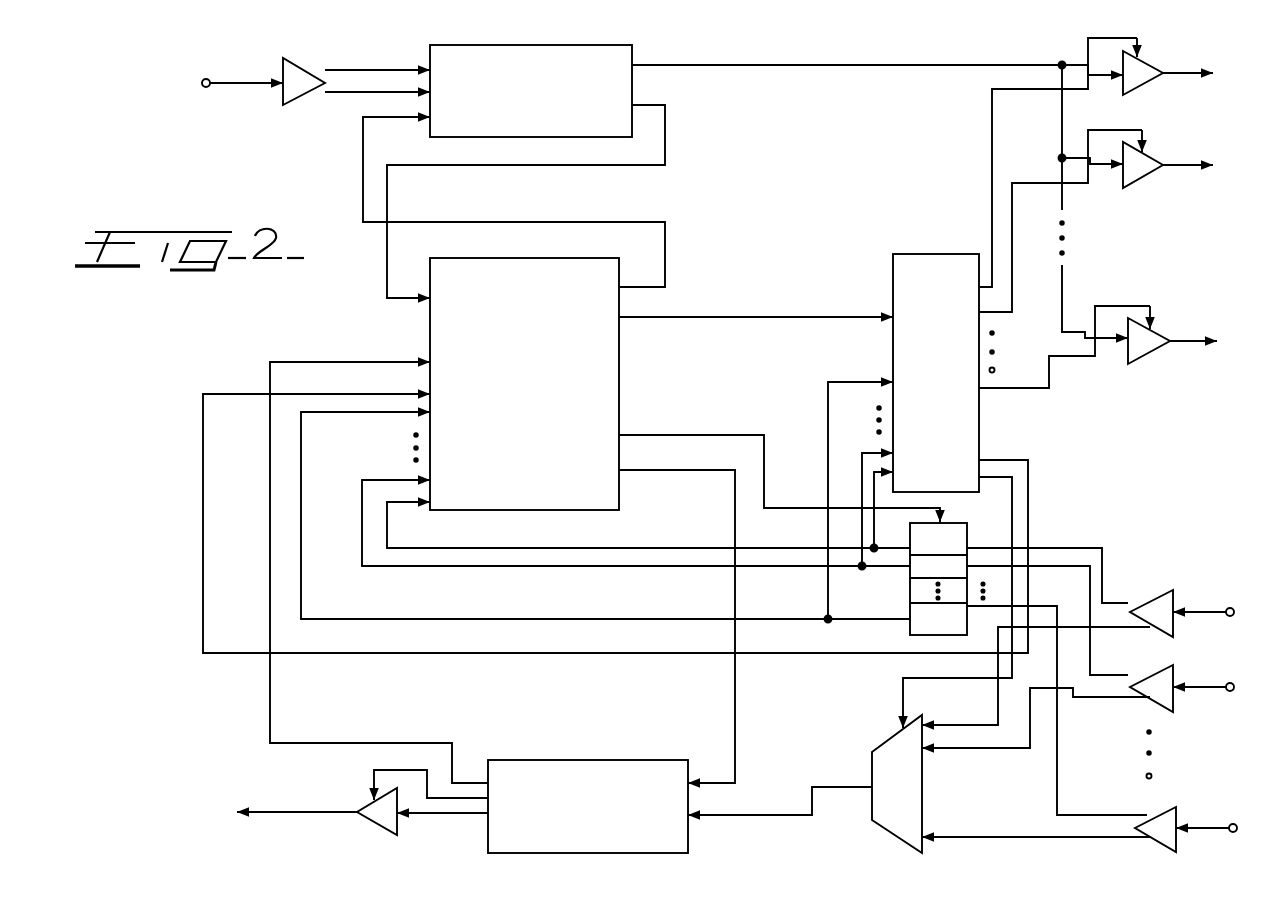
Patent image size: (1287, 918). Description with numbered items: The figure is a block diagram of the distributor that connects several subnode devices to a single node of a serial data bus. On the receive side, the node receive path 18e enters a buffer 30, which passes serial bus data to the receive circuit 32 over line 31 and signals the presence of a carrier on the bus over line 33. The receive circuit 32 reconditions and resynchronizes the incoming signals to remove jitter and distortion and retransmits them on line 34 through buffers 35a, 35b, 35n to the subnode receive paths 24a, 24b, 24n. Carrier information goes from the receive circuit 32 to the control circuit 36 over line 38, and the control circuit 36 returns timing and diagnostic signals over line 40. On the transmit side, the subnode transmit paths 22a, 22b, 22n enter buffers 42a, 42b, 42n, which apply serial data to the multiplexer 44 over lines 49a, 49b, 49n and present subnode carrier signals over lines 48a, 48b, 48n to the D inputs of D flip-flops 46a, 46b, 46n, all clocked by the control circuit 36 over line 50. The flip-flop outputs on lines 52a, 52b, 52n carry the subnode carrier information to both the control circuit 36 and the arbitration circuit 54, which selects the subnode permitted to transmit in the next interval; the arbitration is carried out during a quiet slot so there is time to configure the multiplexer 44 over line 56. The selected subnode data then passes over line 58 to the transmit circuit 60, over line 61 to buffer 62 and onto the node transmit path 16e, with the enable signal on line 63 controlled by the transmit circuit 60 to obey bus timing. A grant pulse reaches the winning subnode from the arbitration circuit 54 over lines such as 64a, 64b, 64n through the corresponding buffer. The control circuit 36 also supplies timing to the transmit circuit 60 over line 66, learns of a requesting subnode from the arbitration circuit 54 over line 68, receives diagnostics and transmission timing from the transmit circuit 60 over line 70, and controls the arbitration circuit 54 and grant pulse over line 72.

The node transmit path 16e is at (285, 812).
The node receive path 18e is at (248, 85).
The subnode transmit path 22a is at (1210, 612).
The subnode transmit path 22b is at (1210, 687).
The subnode transmit path 22n is at (1210, 828).
The subnode receive path 24a is at (1178, 76).
The subnode receive path 24b is at (1177, 160).
The subnode receive path 24n is at (1183, 340).
The buffer 30 is at (300, 99).
The line 31 is at (357, 69).
The receive circuit 32 is at (519, 129).
The line 33 is at (352, 94).
The line 34 is at (840, 67).
The buffer 35a is at (1152, 60).
The buffer 35b is at (1153, 178).
The buffer 35n is at (1157, 355).
The control circuit 36 is at (512, 395).
The line 38 is at (667, 133).
The line 40 is at (363, 192).
The buffer 42a is at (1158, 592).
The buffer 42b is at (1158, 667).
The buffer 42n is at (1157, 812).
The multiplexer 44 is at (895, 841).
The D flip-flop 46a is at (992, 507).
The D flip-flop 46b is at (910, 570).
The D flip-flop 46n is at (938, 632).
The line 48a is at (1058, 530).
The line 48b is at (1088, 612).
The line 48n is at (1057, 778).
The line 49a is at (997, 707).
The line 49b is at (1112, 698).
The line 49n is at (1022, 837).
The line 50 is at (795, 507).
The line 52a is at (612, 548).
The line 52b is at (577, 568).
The line 52n is at (543, 621).
The arbitration circuit 54 is at (915, 362).
The line 56 is at (902, 714).
The line 58 is at (782, 816).
The transmit circuit 60 is at (576, 846).
The line 61 is at (455, 816).
The buffer 62 is at (373, 826).
The line 63 is at (373, 781).
The line 64a is at (992, 117).
The line 64b is at (1032, 183).
The line 64n is at (1027, 387).
The line 66 is at (733, 715).
The line 68 is at (1008, 458).
The line 70 is at (360, 743).
The line 72 is at (785, 316).